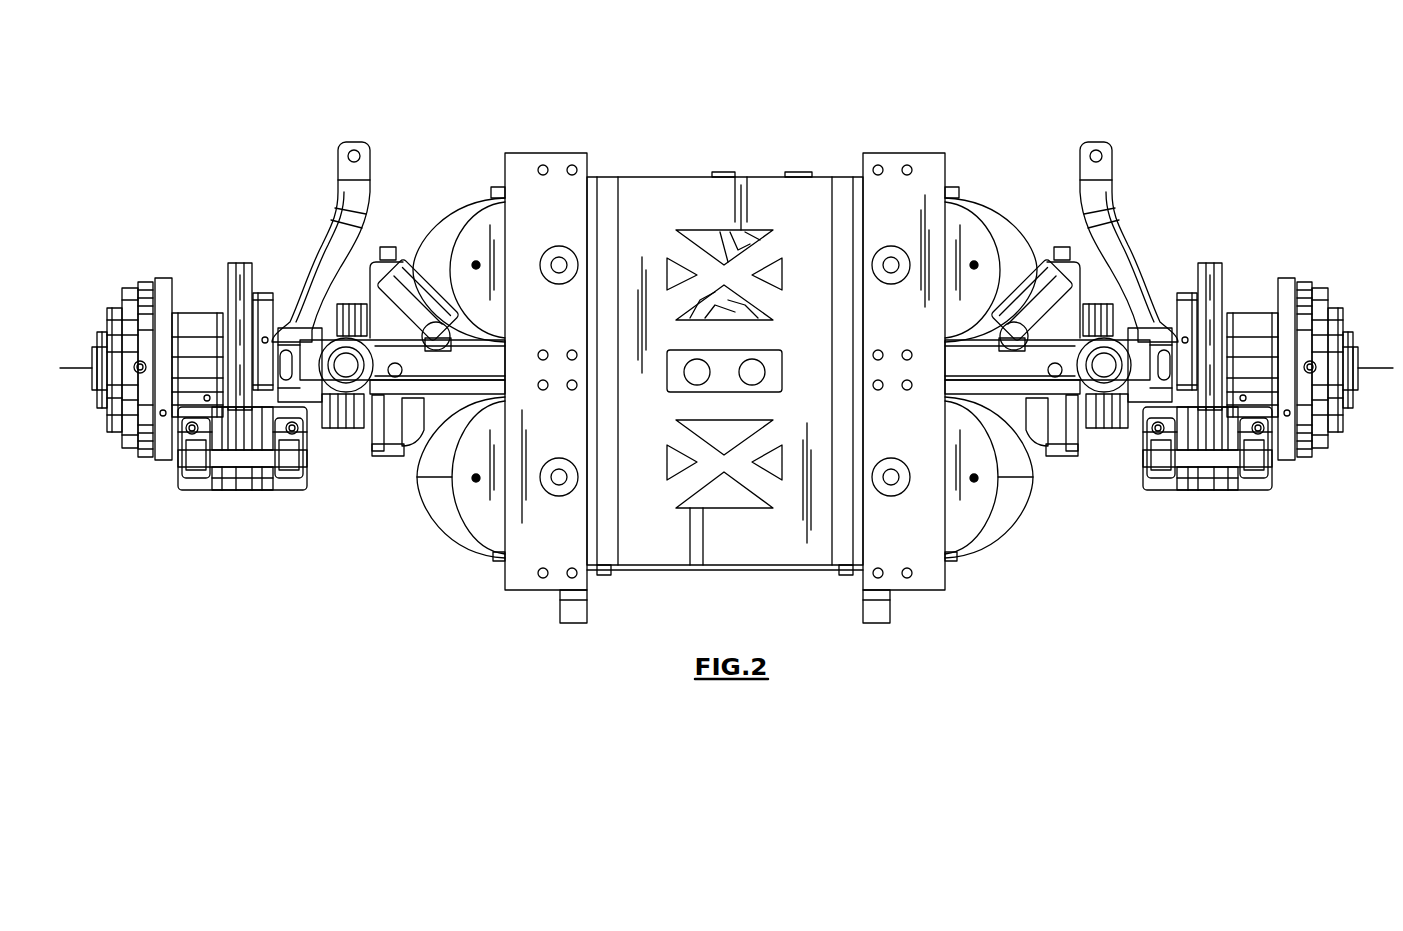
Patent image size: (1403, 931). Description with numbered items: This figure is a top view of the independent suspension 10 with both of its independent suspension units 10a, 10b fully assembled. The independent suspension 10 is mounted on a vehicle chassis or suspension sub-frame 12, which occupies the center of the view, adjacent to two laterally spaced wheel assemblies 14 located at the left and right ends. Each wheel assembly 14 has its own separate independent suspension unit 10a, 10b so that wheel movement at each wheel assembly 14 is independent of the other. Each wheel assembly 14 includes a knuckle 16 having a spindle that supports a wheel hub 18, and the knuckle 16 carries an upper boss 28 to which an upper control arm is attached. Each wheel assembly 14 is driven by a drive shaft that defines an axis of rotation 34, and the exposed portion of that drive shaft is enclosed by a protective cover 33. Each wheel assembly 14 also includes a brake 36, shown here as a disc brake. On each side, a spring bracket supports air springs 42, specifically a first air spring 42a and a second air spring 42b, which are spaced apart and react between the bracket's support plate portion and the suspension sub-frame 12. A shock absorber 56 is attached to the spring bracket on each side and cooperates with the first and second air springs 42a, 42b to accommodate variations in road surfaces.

The independent suspension 10 is at (807, 104).
The independent suspension unit 10a is at (378, 498).
The independent suspension unit 10b is at (1072, 498).
The suspension sub-frame 12 is at (643, 197).
The wheel assembly 14 is at (120, 268).
The knuckle 16 is at (305, 385).
The wheel hub 18 is at (165, 277).
The upper boss 28 is at (296, 338).
The protective cover 33 is at (358, 442).
The axis of rotation 34 is at (1365, 372).
The brake 36 is at (240, 262).
The air spring 42 is at (466, 199).
The first air spring 42a is at (443, 216).
The second air spring 42b is at (433, 521).
The shock absorber 56 is at (396, 268).